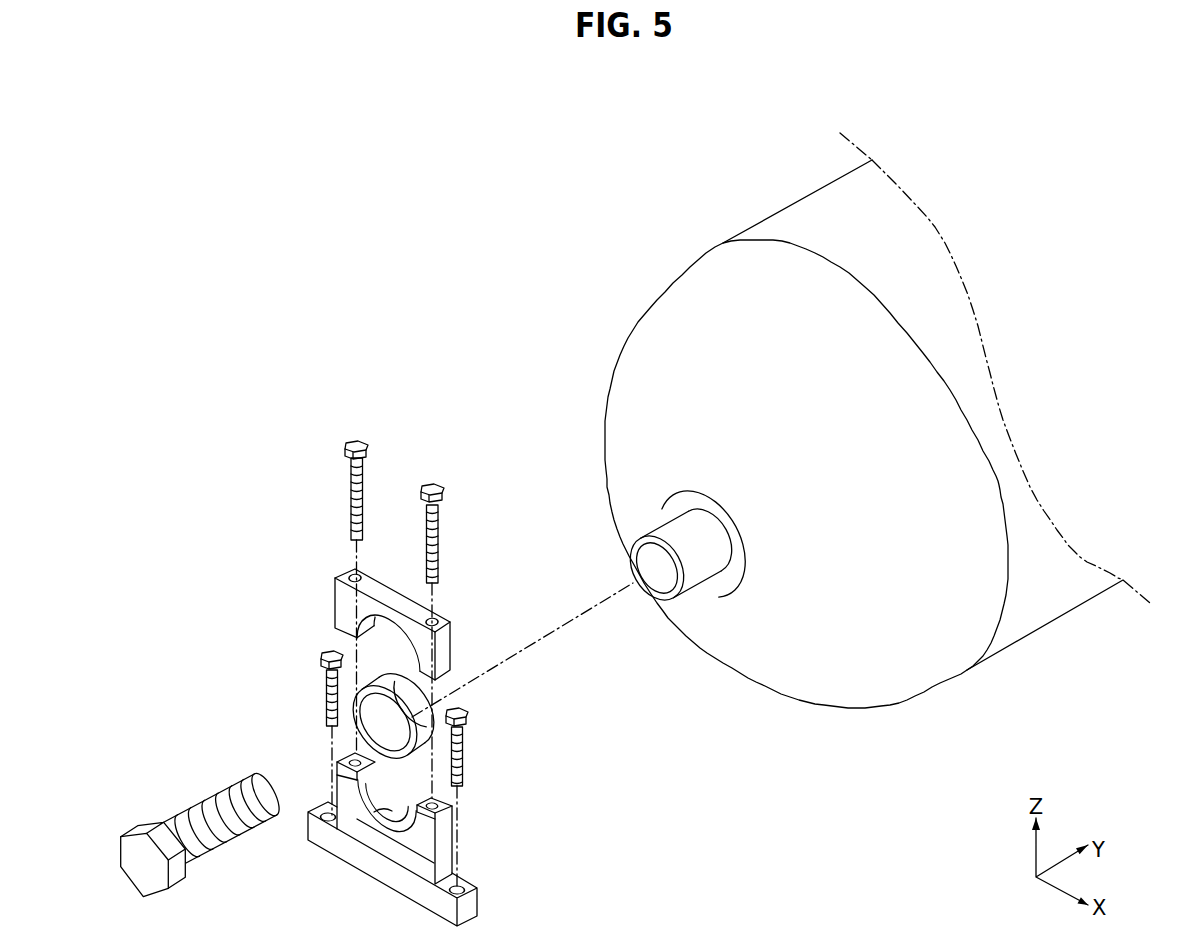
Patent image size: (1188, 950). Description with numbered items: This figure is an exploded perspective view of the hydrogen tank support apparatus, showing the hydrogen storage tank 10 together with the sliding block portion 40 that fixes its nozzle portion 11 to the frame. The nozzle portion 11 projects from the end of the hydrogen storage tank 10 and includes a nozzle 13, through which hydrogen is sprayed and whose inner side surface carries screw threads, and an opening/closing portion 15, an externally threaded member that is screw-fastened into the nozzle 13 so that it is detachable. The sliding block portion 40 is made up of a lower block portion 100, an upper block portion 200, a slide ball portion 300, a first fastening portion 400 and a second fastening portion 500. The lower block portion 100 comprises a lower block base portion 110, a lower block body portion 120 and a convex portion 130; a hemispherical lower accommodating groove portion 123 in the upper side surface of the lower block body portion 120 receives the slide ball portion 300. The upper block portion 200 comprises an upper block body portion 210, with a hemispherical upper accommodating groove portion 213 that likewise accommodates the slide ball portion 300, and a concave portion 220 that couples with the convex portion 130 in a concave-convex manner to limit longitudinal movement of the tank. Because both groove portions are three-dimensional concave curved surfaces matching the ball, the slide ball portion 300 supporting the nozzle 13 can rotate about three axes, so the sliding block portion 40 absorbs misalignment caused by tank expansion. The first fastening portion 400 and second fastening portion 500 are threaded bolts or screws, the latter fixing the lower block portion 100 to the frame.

The hydrogen storage tank 10 is at (1040, 612).
The nozzle portion 11 is at (786, 749).
The nozzle 13 is at (697, 557).
The opening/closing portion 15 is at (131, 833).
The sliding block portion 40 is at (160, 535).
The lower block portion 100 is at (443, 840).
The lower block base portion 110 is at (472, 903).
The lower block body portion 120 is at (443, 843).
The convex portion 130 is at (453, 800).
The lower accommodating groove portion 123 is at (387, 812).
The upper block portion 200 is at (419, 607).
The upper block body portion 210 is at (447, 615).
The upper accommodating groove portion 213 is at (355, 638).
The concave portion 220 is at (451, 676).
The slide ball portion 300 is at (416, 712).
The first fastening portion 400 is at (353, 443).
The second fastening portion 500 is at (321, 658).